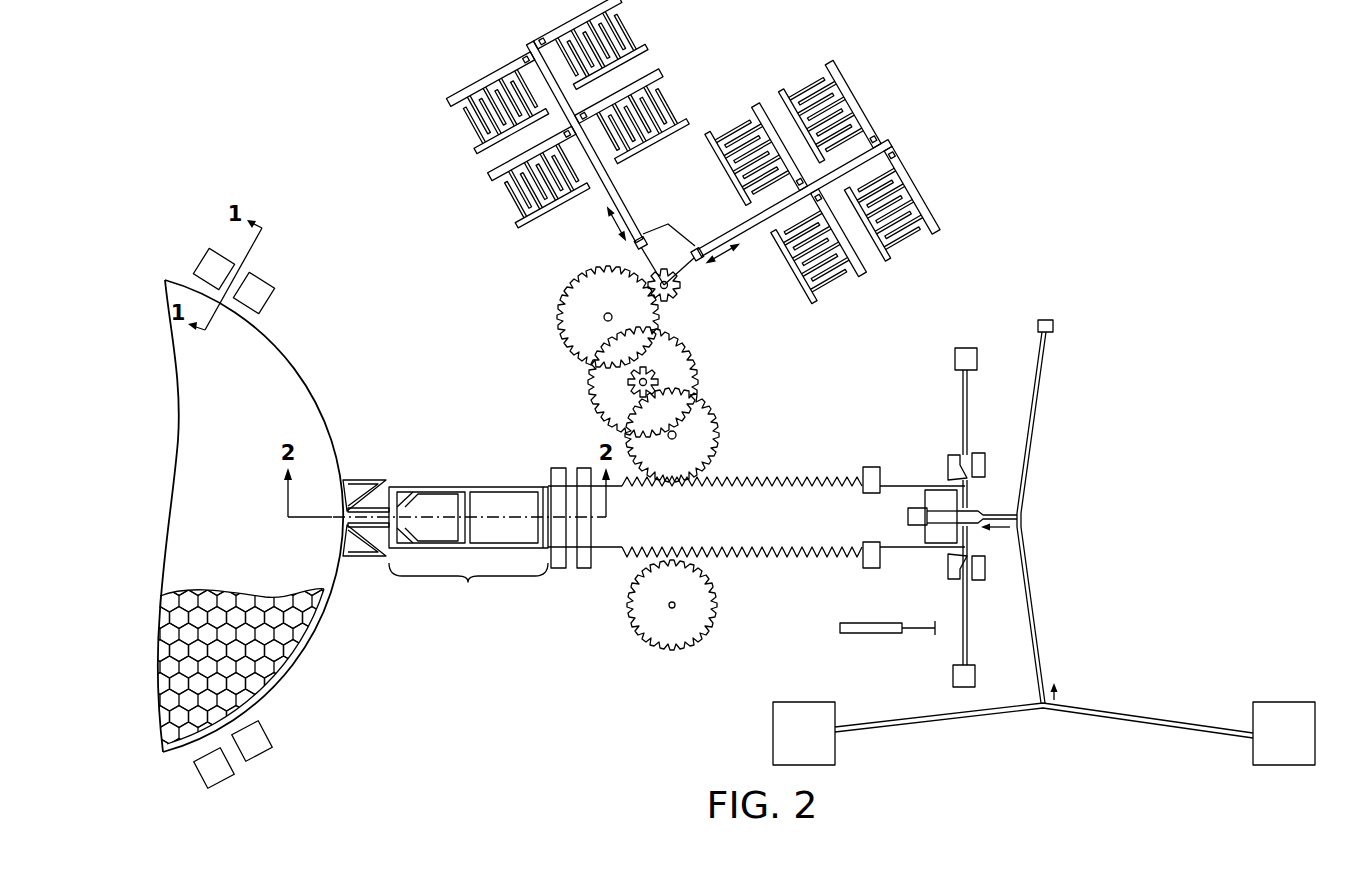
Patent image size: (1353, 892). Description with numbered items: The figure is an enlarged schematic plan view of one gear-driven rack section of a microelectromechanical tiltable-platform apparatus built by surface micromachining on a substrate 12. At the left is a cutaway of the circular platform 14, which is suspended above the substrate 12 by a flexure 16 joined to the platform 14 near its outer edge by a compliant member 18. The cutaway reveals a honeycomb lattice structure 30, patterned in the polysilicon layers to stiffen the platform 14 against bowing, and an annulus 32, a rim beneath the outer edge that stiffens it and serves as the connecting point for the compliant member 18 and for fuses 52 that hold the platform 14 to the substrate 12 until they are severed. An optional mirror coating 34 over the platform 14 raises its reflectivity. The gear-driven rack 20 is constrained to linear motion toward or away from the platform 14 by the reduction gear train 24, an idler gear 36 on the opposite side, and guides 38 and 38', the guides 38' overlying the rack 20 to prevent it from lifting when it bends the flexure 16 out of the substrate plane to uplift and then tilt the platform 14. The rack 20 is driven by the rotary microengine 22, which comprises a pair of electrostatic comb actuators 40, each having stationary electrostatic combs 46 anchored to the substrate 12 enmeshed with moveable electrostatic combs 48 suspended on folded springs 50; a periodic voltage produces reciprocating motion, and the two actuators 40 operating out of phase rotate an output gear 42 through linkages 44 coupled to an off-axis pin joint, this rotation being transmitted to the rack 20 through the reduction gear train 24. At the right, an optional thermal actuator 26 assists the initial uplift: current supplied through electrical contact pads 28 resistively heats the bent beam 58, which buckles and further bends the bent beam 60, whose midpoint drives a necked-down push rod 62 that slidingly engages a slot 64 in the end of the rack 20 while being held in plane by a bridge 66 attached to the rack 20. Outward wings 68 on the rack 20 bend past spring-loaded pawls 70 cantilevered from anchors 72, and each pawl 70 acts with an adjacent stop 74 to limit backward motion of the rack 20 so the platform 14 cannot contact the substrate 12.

The substrate 12 is at (451, 688).
The platform 14 is at (318, 388).
The flexure 16 is at (468, 546).
The compliant member 18 is at (364, 480).
The gear-driven rack 20 is at (721, 528).
The rotary microengine 22 is at (478, 190).
The reduction gear train 24 is at (560, 332).
The thermal actuator 26 is at (1068, 597).
The electrical contact pads 28 is at (792, 744).
The lattice structure 30 is at (293, 627).
The annulus 32 is at (287, 675).
The mirror coating 34 is at (220, 527).
The idler gear 36 is at (660, 632).
The guides 38 is at (867, 536).
The guides 38' is at (571, 542).
The electrostatic comb actuator 40 is at (533, 47).
The output gear 42 is at (687, 290).
The linkages 44 is at (668, 243).
The stationary electrostatic combs 46 is at (663, 98).
The moveable electrostatic combs 48 is at (680, 113).
The folded springs 50 is at (660, 83).
The fuses 52 is at (268, 302).
The bent beam 58 is at (1000, 718).
The bent beam 60 is at (1030, 486).
The push rod 62 is at (998, 512).
The slot 64 is at (916, 527).
The bridge 66 is at (929, 527).
The wings 68 is at (968, 551).
The pawl 70 is at (948, 457).
The anchor 72 is at (955, 357).
The stop 74 is at (979, 453).